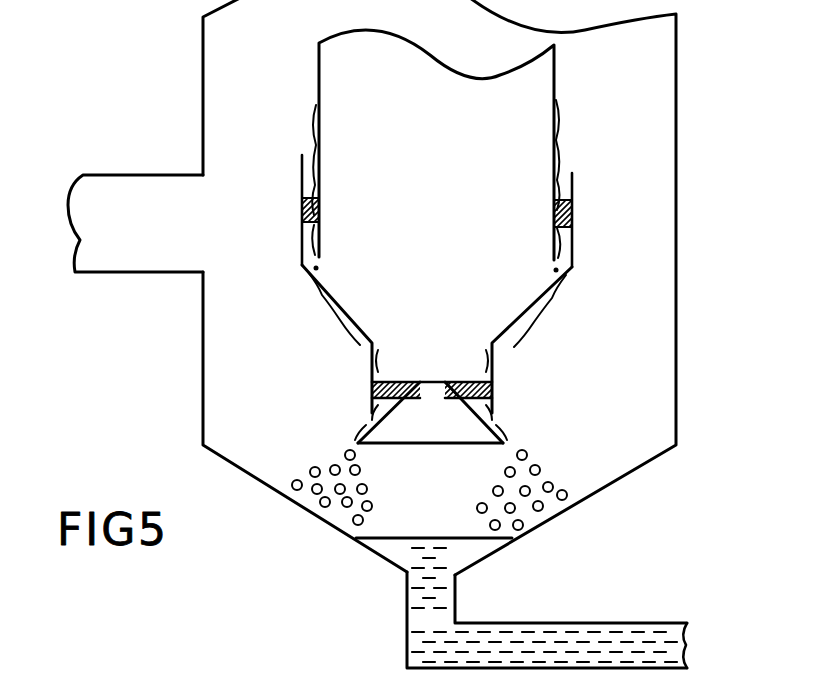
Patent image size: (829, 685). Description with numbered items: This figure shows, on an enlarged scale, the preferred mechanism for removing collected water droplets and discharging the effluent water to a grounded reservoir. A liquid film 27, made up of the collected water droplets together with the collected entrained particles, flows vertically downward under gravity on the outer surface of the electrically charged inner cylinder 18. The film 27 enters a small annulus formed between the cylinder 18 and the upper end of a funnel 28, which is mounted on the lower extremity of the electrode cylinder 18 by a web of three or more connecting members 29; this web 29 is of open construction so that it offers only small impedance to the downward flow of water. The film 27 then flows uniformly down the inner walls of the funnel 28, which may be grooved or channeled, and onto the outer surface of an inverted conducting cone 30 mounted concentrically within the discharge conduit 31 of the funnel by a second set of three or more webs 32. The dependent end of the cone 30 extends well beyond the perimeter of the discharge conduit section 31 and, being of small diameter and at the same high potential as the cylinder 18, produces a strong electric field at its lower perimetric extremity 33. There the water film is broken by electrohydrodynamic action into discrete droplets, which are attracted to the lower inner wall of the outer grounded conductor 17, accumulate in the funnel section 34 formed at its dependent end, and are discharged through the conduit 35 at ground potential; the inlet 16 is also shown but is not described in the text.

The inlet conduit 16 is at (95, 280).
The outer grounded conductor 17 is at (677, 100).
The inner cylinder 18 is at (328, 101).
The liquid film 27 is at (562, 126).
The funnel 28 is at (333, 307).
The connecting members 29 is at (572, 202).
The inverted conducting cone 30 is at (427, 450).
The discharge conduit 31 is at (495, 372).
The webs 32 is at (397, 375).
The lower perimetric extremity 33 is at (353, 443).
The funnel section 34 is at (355, 540).
The conduit 35 is at (640, 617).